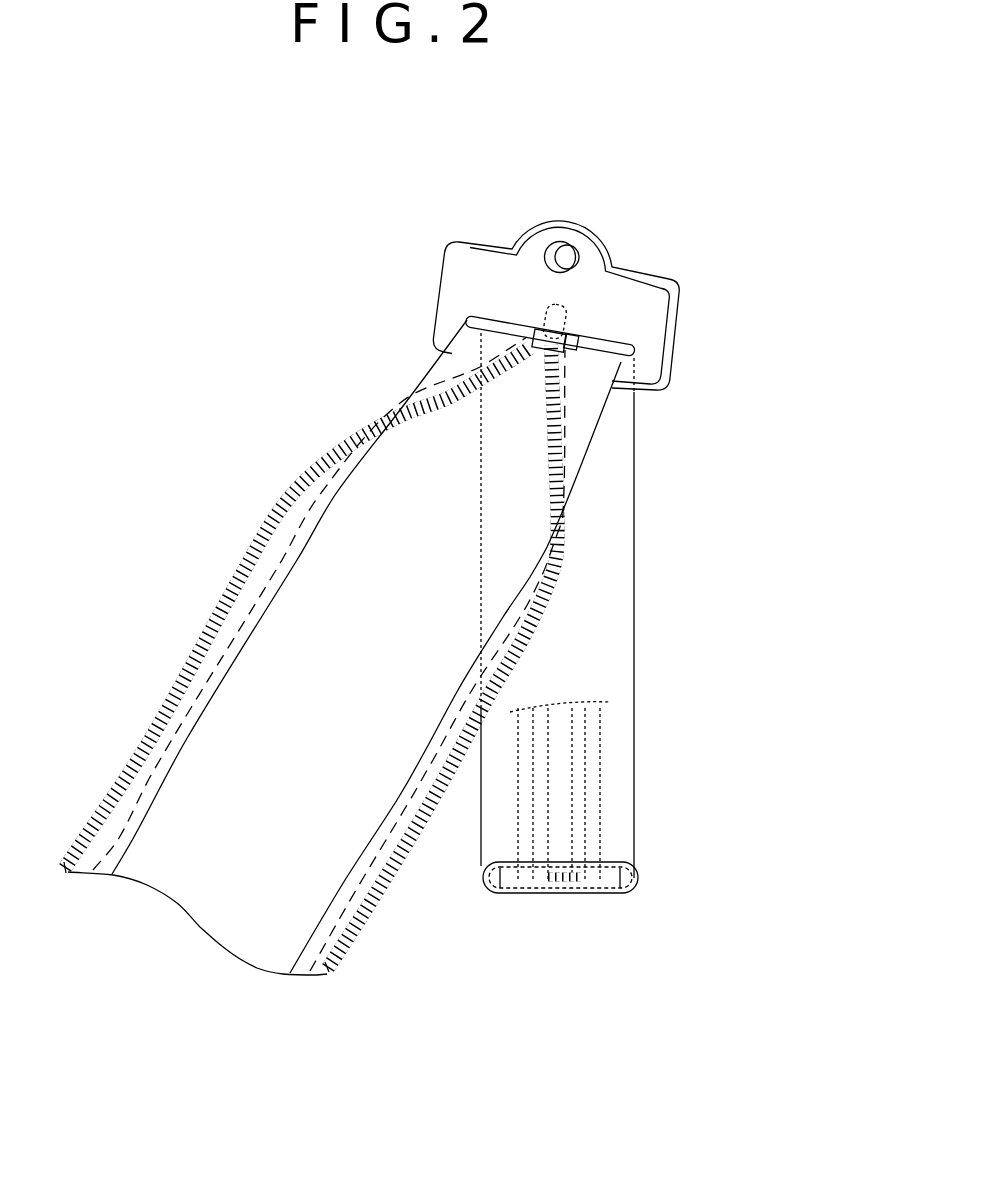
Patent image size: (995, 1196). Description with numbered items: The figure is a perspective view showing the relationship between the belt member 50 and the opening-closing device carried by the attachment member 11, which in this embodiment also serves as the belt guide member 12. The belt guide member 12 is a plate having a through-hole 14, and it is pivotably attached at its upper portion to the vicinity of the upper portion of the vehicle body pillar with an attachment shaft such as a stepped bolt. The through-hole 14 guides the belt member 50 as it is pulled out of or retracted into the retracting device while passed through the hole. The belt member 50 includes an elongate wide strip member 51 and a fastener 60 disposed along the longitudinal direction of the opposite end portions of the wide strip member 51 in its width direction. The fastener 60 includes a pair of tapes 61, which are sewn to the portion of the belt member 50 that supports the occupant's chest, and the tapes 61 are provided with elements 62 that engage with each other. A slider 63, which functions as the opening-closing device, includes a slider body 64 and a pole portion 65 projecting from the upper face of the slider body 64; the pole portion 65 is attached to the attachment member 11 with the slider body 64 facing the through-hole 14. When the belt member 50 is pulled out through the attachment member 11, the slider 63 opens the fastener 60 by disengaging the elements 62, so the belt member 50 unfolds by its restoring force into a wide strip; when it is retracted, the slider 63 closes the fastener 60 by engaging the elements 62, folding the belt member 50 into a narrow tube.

The attachment member 11 is at (556, 280).
The belt guide member 12 is at (500, 243).
The through-hole 14 is at (466, 319).
The belt member 50 is at (638, 598).
The wide strip member 51 is at (205, 912).
The fastener 60 is at (565, 891).
The tapes 61 is at (90, 868).
The elements 62 is at (346, 444).
The slider 63 is at (543, 331).
The slider body 64 is at (578, 336).
The pole portion 65 is at (568, 312).